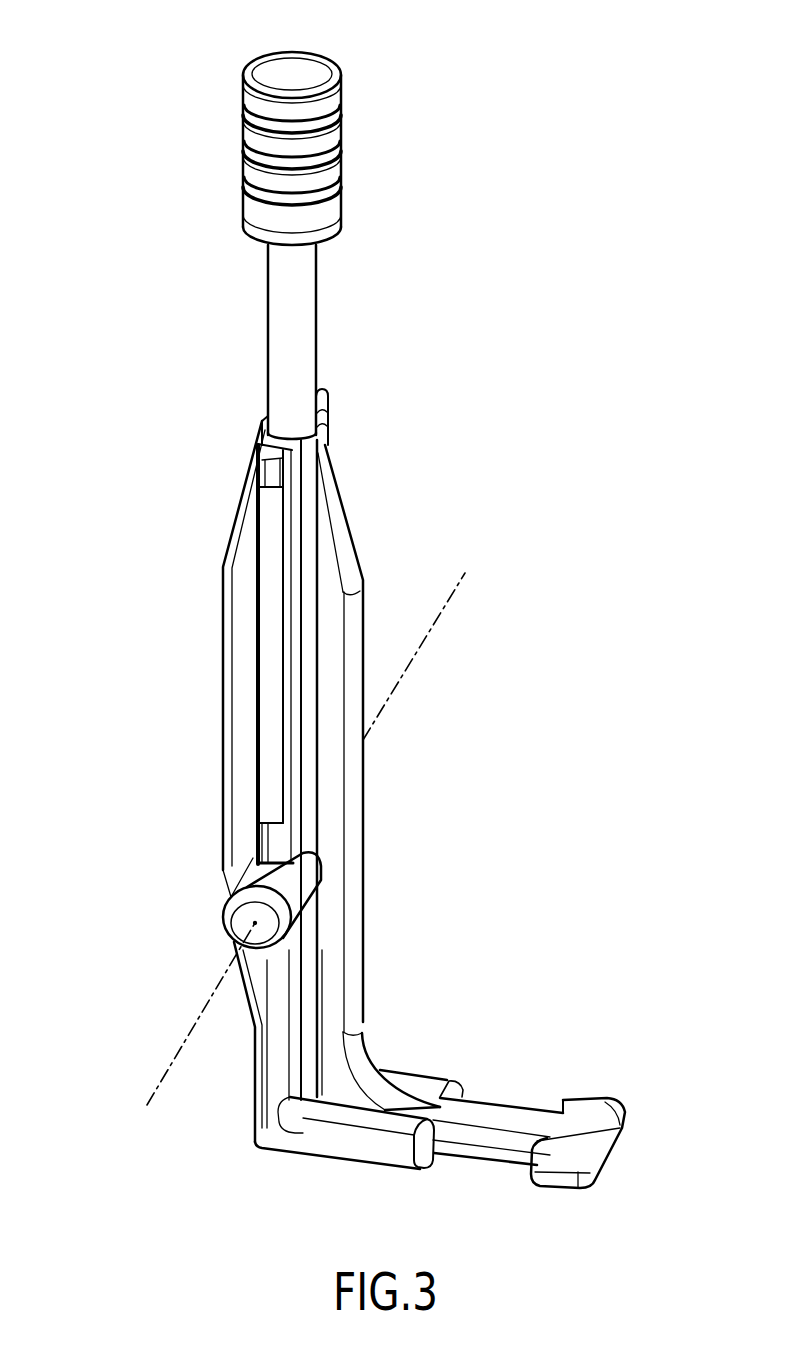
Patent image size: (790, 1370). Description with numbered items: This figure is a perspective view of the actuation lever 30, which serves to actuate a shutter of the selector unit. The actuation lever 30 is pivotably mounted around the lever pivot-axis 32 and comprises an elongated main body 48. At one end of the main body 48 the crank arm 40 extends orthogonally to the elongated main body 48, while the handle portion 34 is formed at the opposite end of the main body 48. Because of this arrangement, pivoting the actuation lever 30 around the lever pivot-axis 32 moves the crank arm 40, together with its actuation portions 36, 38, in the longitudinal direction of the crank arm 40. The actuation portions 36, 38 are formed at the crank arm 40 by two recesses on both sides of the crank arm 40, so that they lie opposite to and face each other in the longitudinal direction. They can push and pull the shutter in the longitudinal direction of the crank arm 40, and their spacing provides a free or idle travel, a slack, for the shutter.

The actuation lever 30 is at (117, 110).
The lever pivot-axis 32 is at (183, 1043).
The handle portion 34 is at (292, 68).
The actuation portion 36 is at (533, 1178).
The actuation portion 38 is at (425, 1170).
The crank arm 40 is at (592, 1128).
The main body 48 is at (238, 646).